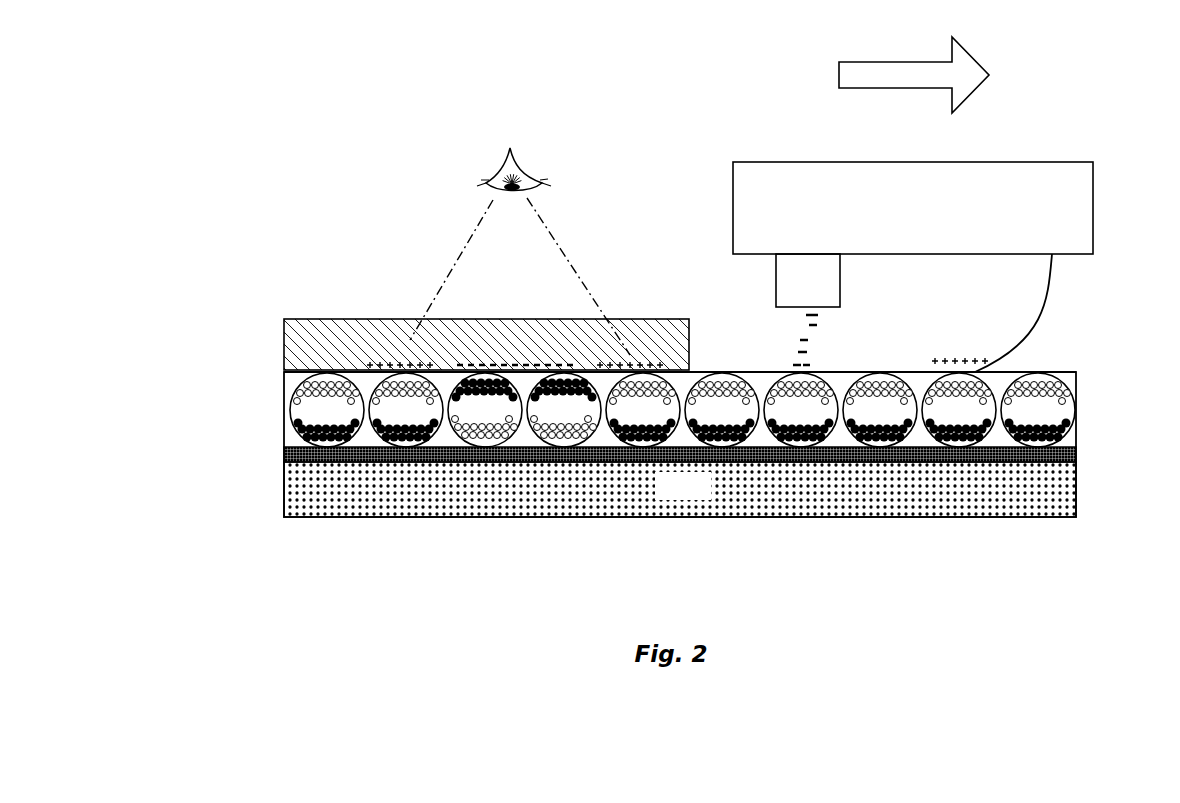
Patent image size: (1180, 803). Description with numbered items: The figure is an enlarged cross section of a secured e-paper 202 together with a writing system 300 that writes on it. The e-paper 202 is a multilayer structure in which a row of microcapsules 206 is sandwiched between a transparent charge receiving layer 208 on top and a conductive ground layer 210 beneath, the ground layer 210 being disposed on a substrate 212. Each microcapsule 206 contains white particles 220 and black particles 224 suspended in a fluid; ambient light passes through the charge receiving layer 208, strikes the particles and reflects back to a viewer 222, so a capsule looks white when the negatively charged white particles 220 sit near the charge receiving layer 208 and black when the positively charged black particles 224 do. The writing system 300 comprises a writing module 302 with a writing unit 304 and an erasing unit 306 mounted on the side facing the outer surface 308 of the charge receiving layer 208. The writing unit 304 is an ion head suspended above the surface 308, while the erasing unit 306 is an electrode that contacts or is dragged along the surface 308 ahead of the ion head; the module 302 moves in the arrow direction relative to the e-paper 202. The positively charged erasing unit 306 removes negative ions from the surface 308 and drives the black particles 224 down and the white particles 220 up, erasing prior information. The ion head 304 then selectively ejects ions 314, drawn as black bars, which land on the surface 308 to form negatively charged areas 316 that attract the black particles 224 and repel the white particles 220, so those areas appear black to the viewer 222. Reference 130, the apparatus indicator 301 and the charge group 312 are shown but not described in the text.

The electro-optic display 130 is at (362, 381).
The secured e-paper 202 is at (267, 372).
The microcapsules 206 is at (350, 435).
The transparent charge receiving layer 208 is at (1067, 372).
The conductive ground layer 210 is at (1055, 453).
The substrate 212 is at (680, 489).
The white particles 220 is at (1058, 395).
The viewer 222 is at (520, 170).
The black particles 224 is at (1067, 432).
The writing system 300 is at (642, 320).
The ion deposition apparatus 301 is at (776, 130).
The writing module 302 is at (913, 208).
The writing unit 304 is at (808, 280).
The erasing unit 306 is at (1050, 294).
The outer surface 308 is at (380, 362).
The positive charges under blade 312 is at (945, 358).
The ions 314 is at (783, 310).
The negatively charged areas 316 is at (558, 362).